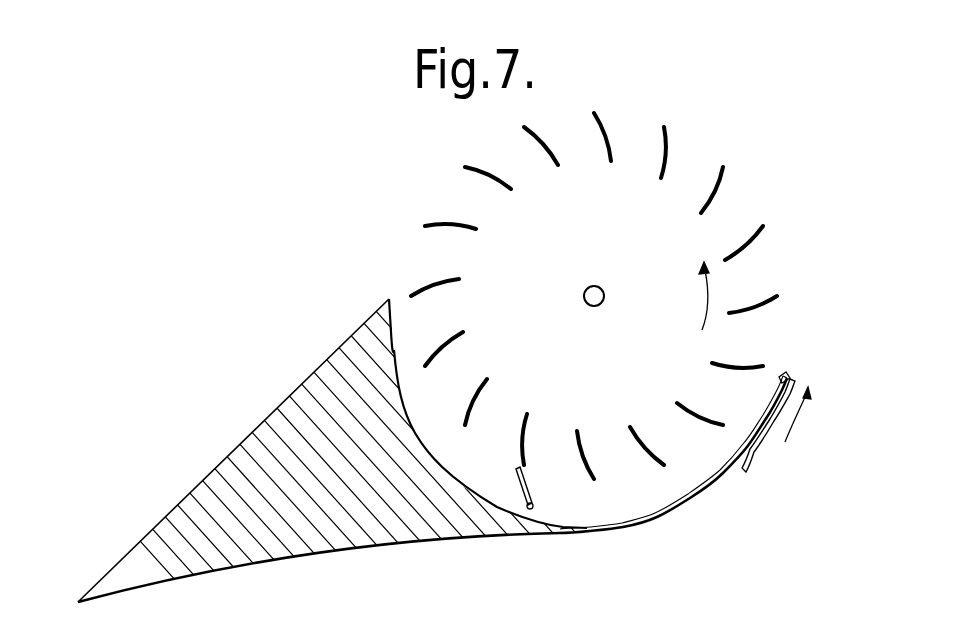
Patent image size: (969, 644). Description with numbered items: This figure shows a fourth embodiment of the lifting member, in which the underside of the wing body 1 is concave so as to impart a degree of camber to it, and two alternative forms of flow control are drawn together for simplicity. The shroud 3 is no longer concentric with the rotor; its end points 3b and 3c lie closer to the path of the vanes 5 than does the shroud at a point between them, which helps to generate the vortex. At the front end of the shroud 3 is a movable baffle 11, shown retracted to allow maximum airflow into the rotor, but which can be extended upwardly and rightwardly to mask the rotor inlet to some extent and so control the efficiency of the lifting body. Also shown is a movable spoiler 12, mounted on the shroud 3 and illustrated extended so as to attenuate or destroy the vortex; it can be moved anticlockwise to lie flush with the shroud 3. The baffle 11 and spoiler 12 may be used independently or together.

The wing body 1 is at (258, 391).
The shroud 3 is at (683, 510).
The end point of the shroud 3b is at (784, 380).
The end point of the shroud 3c is at (389, 299).
The vanes 5 is at (758, 238).
The movable baffle 11 is at (772, 445).
The movable spoiler 12 is at (533, 488).